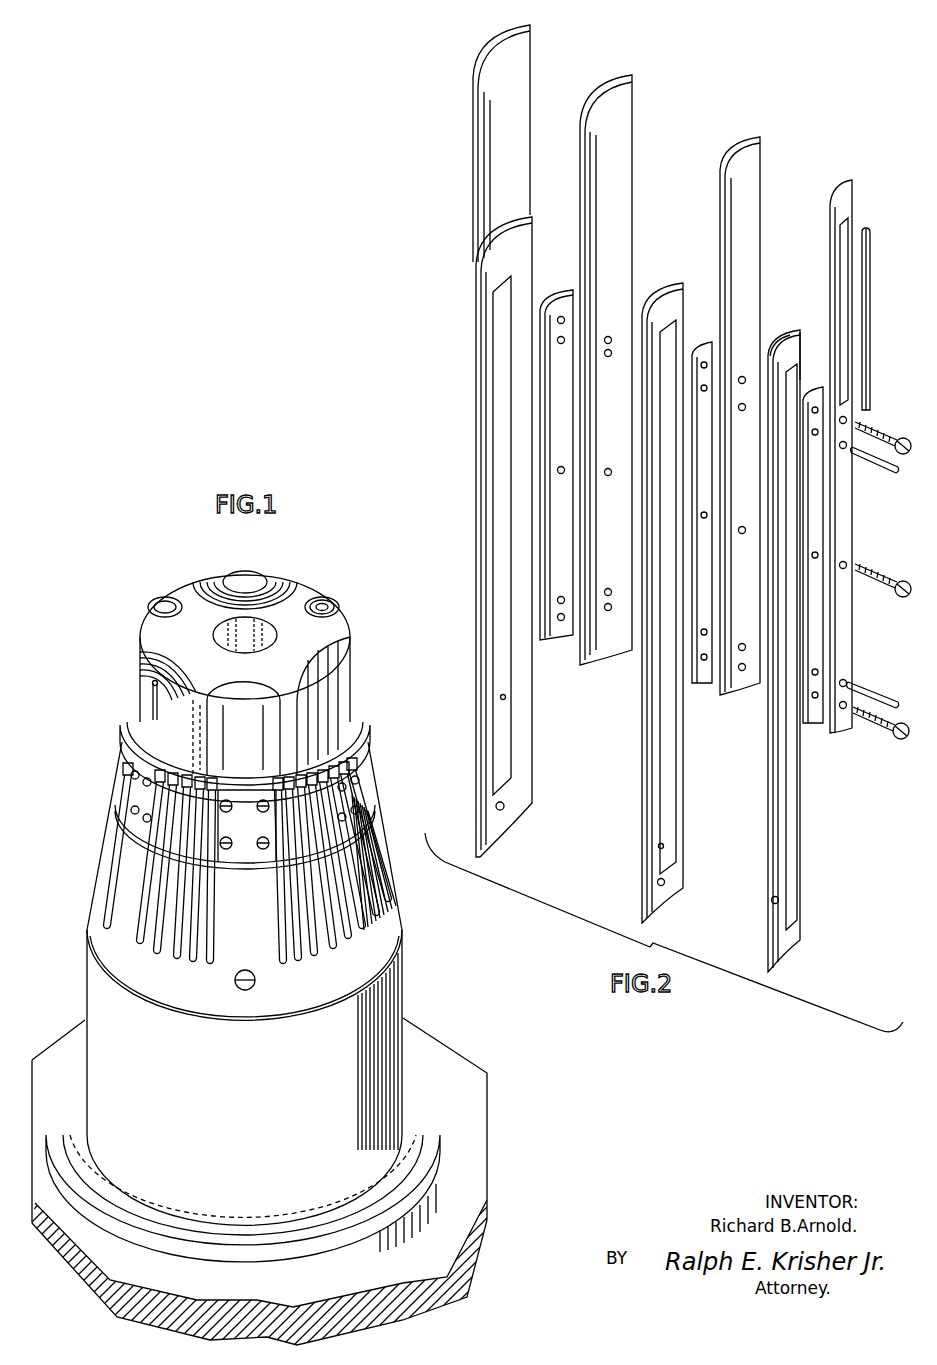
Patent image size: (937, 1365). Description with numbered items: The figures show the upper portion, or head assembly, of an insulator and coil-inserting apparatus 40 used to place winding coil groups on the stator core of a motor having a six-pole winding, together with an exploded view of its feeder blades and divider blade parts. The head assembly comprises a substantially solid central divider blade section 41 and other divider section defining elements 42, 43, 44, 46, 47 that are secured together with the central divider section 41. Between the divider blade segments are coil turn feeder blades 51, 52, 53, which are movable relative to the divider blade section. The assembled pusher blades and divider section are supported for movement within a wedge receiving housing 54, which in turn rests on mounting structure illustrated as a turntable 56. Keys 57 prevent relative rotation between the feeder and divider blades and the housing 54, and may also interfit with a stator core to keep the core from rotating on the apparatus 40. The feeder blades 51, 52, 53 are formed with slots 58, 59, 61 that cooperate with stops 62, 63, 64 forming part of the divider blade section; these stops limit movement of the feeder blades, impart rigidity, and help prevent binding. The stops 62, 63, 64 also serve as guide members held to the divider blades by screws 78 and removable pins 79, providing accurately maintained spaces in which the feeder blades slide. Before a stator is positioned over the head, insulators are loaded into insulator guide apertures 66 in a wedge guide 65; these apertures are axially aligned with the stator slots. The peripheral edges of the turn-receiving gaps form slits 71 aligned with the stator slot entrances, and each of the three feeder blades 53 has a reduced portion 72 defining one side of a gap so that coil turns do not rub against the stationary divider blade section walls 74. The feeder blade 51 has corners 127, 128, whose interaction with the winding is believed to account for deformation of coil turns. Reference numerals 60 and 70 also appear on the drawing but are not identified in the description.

In FIG. 1, the apparatus 40 is at (449, 974).
In FIG. 1, the central divider blade section 41 is at (306, 590).
In FIG. 1, the divider section defining element 42 is at (208, 584).
In FIG. 2, the divider section defining element 42 is at (632, 99).
In FIG. 1, the divider section defining element 43 is at (222, 582).
In FIG. 2, the divider section defining element 43 is at (752, 160).
In FIG. 1, the divider section defining element 44 is at (248, 580).
In FIG. 2, the divider section defining element 44 is at (852, 198).
In FIG. 1, the divider section defining element 46 is at (345, 615).
In FIG. 1, the divider section defining element 47 is at (333, 602).
In FIG. 2, the coil turn feeder blade 51 is at (800, 854).
In FIG. 2, the coil turn feeder blade 52 is at (684, 819).
In FIG. 2, the coil turn feeder blade 53 is at (525, 765).
In FIG. 1, the wedge receiving housing 54 is at (400, 918).
In FIG. 1, the turntable 56 is at (485, 1168).
In FIG. 1, the key 57 is at (150, 684).
In FIG. 2, the key 57 is at (871, 240).
In FIG. 2, the slot 58 is at (772, 901).
In FIG. 2, the slot 59 is at (665, 846).
In FIG. 1, the slot 60 is at (218, 750).
In FIG. 2, the slot 61 is at (506, 698).
In FIG. 2, the stop 62 is at (558, 640).
In FIG. 2, the stop 63 is at (697, 688).
In FIG. 2, the stop 64 is at (812, 722).
In FIG. 1, the wedge guide 65 is at (148, 740).
In FIG. 1, the insulator guide aperture 66 is at (128, 722).
In FIG. 1, the finger 70 is at (248, 750).
In FIG. 1, the slit 71 is at (296, 583).
In FIG. 1, the reduced portion 72 is at (217, 598).
In FIG. 2, the reduced portion 72 is at (530, 52).
In FIG. 1, the divider blade section wall 74 is at (238, 688).
In FIG. 2, the screw 78 is at (882, 436).
In FIG. 2, the removable pin 79 is at (884, 470).
In FIG. 2, the corner 127 is at (801, 338).
In FIG. 2, the corner 128 is at (769, 348).